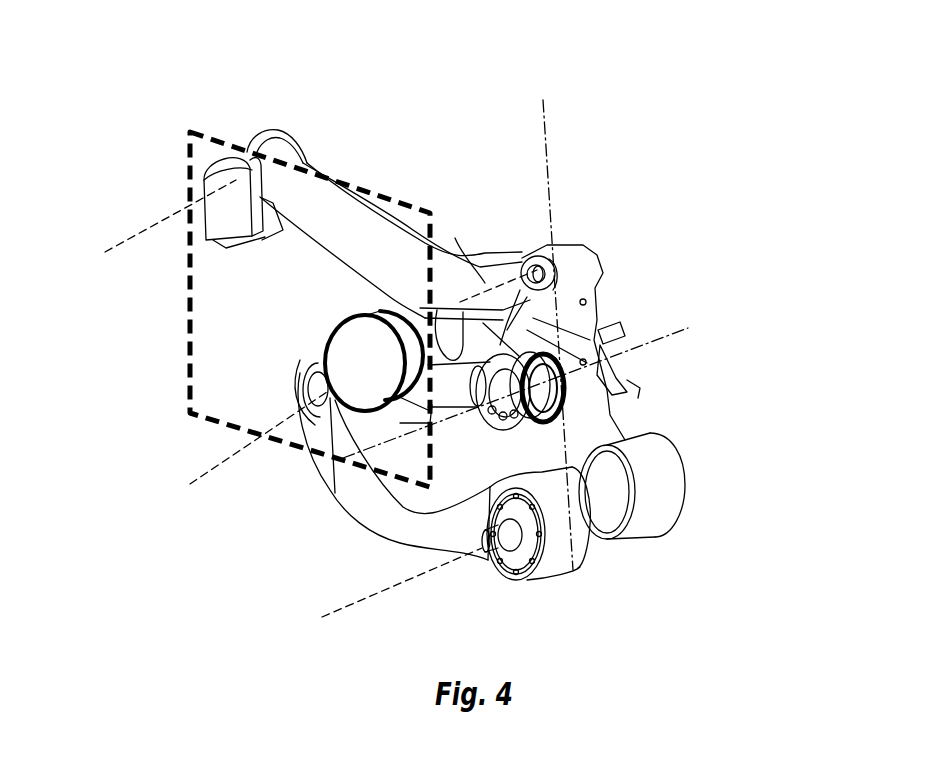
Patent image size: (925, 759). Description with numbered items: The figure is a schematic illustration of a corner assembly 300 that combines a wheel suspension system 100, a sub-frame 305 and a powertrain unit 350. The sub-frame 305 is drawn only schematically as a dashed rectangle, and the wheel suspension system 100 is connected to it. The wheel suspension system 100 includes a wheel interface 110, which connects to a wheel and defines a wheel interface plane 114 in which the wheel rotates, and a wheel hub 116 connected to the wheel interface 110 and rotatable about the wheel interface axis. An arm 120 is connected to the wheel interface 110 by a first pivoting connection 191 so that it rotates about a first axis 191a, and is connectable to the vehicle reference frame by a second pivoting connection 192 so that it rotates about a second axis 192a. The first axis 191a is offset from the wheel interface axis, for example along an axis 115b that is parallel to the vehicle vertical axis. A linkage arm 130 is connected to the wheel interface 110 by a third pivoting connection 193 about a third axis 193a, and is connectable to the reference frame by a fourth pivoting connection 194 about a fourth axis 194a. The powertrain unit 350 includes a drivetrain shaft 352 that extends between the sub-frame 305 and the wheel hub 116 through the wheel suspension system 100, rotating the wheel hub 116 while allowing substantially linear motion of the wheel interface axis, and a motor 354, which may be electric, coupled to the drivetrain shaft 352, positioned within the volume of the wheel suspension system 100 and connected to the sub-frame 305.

The corner assembly 300 is at (71, 36).
The wheel suspension system 100 is at (373, 140).
The wheel interface 110 is at (593, 252).
The wheel interface plane 114 is at (670, 333).
The axis 115b is at (548, 150).
The wheel hub 116 is at (620, 328).
The arm 120 is at (367, 500).
The linkage arm 130 is at (333, 243).
The first pivoting connection 191 is at (513, 563).
The first axis 191a is at (412, 592).
The second pivoting connection 192 is at (317, 382).
The second axis 192a is at (200, 478).
The third pivoting connection 193 is at (533, 264).
The third axis 193a is at (483, 298).
The fourth pivoting connection 194 is at (228, 144).
The fourth axis 194a is at (149, 229).
The sub-frame 305 is at (187, 340).
The powertrain unit 350 is at (788, 313).
The drivetrain shaft 352 is at (447, 380).
The motor 354 is at (432, 420).